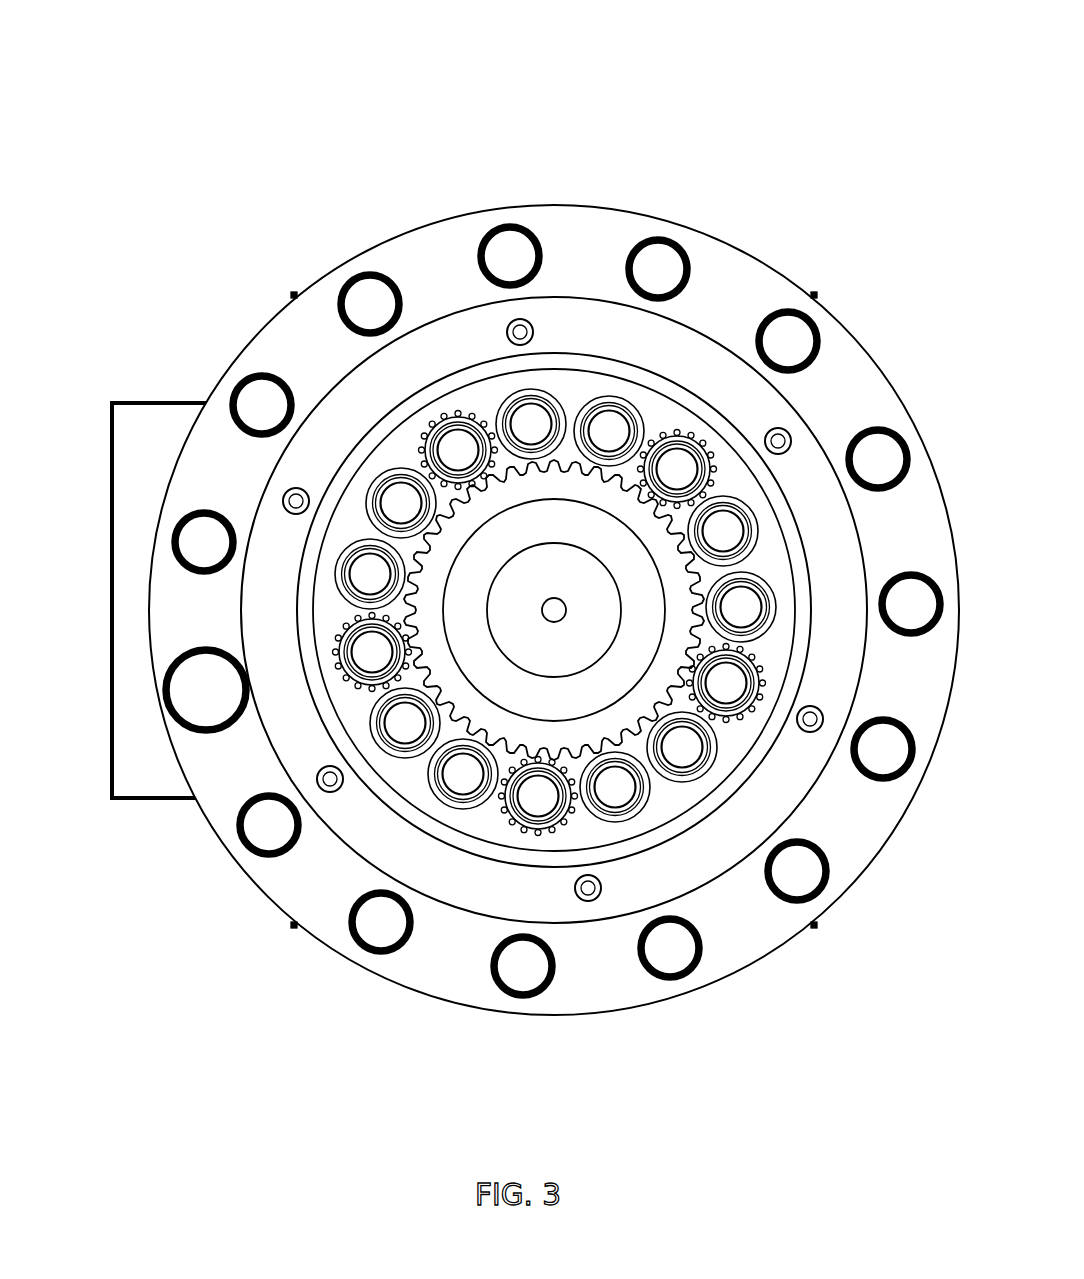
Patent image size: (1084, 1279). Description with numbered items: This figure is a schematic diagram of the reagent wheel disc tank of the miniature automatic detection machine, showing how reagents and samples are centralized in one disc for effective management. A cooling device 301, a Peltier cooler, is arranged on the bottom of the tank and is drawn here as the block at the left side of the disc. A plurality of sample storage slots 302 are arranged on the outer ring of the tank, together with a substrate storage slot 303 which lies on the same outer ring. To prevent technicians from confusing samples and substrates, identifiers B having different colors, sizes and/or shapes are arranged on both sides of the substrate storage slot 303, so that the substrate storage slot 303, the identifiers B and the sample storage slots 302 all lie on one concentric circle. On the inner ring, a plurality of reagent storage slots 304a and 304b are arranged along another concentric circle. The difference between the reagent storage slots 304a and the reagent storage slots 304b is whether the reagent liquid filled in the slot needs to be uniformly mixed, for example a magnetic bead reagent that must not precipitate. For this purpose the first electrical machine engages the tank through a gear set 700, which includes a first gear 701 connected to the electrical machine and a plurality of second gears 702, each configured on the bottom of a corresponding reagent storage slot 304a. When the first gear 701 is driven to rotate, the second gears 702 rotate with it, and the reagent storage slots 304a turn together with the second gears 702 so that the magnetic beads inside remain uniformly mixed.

The cooling device 301 is at (156, 422).
The sample storage slots 302 is at (368, 297).
The substrate storage slot 303 is at (276, 830).
The identifiers B is at (207, 688).
The gear set 700 is at (800, 91).
The first gear 701 is at (546, 483).
The second gears 702 is at (697, 438).
The reagent storage slots 304a is at (538, 797).
The reagent storage slots 304b is at (612, 790).